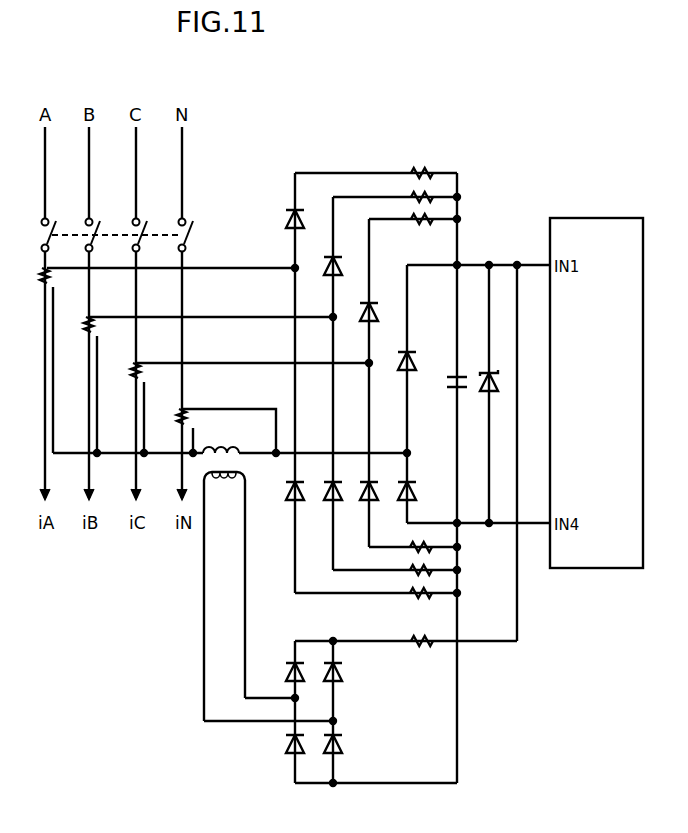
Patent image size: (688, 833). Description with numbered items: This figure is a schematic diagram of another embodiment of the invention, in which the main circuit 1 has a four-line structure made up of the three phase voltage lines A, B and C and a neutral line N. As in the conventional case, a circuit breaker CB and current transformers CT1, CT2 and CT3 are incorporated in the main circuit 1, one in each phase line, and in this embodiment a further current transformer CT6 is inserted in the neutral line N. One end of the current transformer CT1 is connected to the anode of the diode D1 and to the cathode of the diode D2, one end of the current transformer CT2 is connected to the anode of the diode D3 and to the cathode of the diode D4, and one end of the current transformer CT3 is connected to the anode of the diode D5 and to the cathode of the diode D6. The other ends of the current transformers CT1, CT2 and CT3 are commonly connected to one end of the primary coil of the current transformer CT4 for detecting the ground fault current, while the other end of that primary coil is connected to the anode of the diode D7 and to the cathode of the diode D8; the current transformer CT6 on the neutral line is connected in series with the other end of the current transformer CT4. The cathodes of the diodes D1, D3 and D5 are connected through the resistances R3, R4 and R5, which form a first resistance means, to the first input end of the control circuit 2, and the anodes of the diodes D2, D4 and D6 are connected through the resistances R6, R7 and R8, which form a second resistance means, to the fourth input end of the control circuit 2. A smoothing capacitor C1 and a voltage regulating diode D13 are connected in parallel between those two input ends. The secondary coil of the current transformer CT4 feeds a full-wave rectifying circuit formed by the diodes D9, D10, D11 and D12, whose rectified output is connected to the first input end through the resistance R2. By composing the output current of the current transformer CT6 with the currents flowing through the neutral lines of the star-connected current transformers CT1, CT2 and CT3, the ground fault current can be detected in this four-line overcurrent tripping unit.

The main circuit 1 is at (156, 107).
The control circuit 2 is at (584, 218).
The circuit breaker CB is at (189, 241).
The current transformer CT1 is at (40, 292).
The current transformer CT2 is at (84, 338).
The current transformer CT3 is at (130, 370).
The current transformer for detecting the ground fault current CT4 is at (224, 487).
The current transformer CT6 is at (176, 414).
The diode D1 is at (304, 222).
The diode D2 is at (304, 496).
The diode D3 is at (338, 276).
The diode D4 is at (342, 496).
The diode D5 is at (378, 318).
The diode D6 is at (378, 496).
The diode D7 is at (416, 358).
The diode D8 is at (416, 492).
The diode D9 is at (286, 672).
The diode D10 is at (286, 745).
The diode D11 is at (342, 672).
The diode D12 is at (342, 745).
The voltage regulating diode D13 is at (487, 396).
The resistance R2 is at (424, 647).
The resistance R3 is at (420, 168).
The resistance R4 is at (413, 194).
The resistance R5 is at (413, 216).
The resistance R6 is at (412, 588).
The resistance R7 is at (412, 565).
The resistance R8 is at (416, 541).
The smoothing capacitor C1 is at (454, 394).